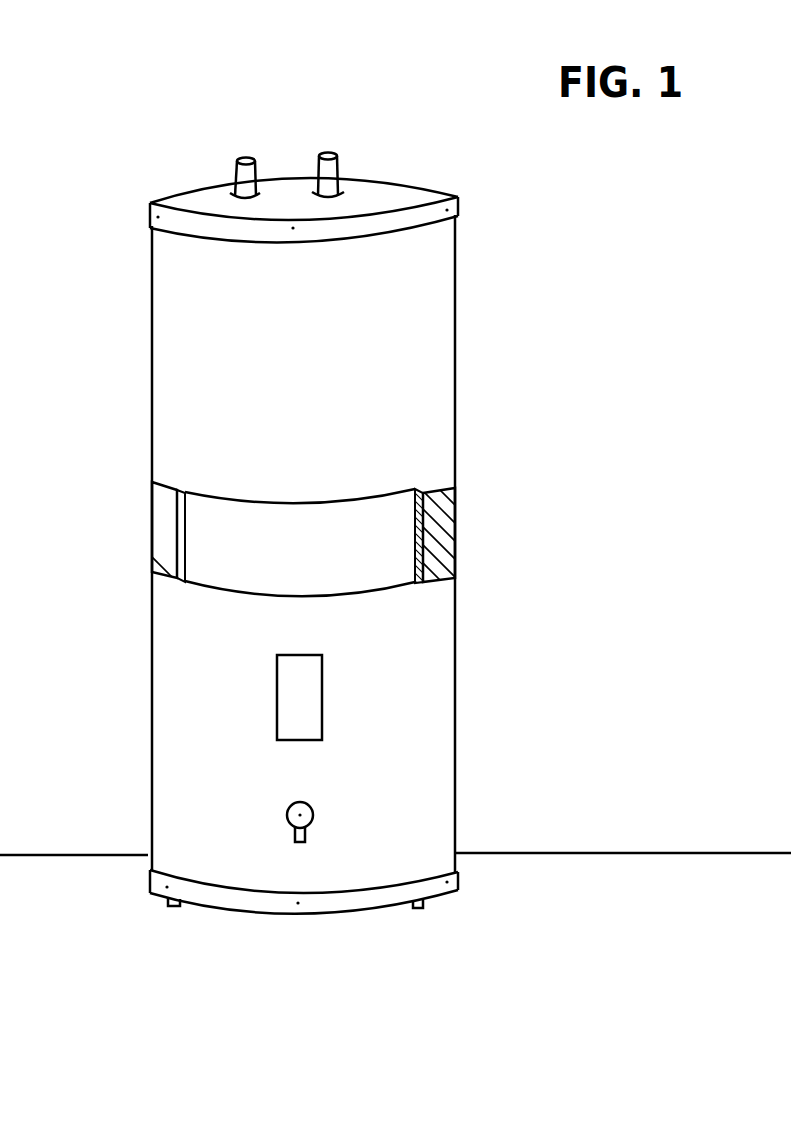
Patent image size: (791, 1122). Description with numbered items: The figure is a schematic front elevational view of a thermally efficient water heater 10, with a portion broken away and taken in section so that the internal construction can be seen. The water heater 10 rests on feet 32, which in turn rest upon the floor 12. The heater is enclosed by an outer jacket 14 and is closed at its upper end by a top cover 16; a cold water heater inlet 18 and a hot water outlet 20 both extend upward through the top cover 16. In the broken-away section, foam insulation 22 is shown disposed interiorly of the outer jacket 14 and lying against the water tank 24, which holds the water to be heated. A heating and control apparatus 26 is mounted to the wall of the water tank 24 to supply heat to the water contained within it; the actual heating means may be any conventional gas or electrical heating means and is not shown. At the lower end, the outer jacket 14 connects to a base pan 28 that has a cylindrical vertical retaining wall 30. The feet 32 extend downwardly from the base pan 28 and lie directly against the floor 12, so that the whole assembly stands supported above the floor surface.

The water heater 10 is at (486, 322).
The floor 12 is at (64, 969).
The outer jacket 14 is at (455, 655).
The top cover 16 is at (405, 182).
The cold water heater inlet 18 is at (237, 157).
The hot water outlet 20 is at (327, 152).
The foam insulation 22 is at (437, 533).
The water tank 24 is at (313, 564).
The heating and control apparatus 26 is at (322, 705).
The base pan 28 is at (330, 913).
The vertical retaining wall 30 is at (460, 880).
The feet 32 is at (175, 907).